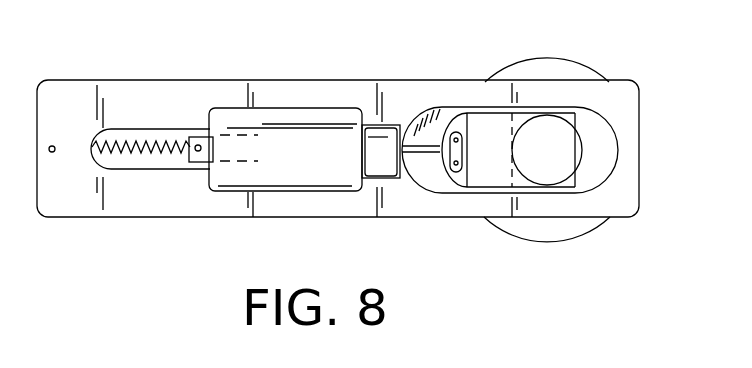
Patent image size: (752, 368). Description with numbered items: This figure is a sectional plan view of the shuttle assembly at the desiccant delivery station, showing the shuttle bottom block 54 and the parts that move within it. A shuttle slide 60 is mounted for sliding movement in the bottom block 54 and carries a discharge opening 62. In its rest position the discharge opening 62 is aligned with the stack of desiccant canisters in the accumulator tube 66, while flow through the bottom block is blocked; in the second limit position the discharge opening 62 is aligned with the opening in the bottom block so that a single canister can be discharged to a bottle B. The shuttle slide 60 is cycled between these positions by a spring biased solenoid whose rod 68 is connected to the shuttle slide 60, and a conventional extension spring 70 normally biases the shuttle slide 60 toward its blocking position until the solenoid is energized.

The bottom block 54 is at (348, 80).
The extension spring 70 is at (136, 143).
The accumulator tube 66 is at (279, 167).
The rod 68 is at (427, 158).
The shuttle slide 60 is at (605, 149).
The discharge opening 62 is at (568, 167).
The bottle B is at (539, 59).